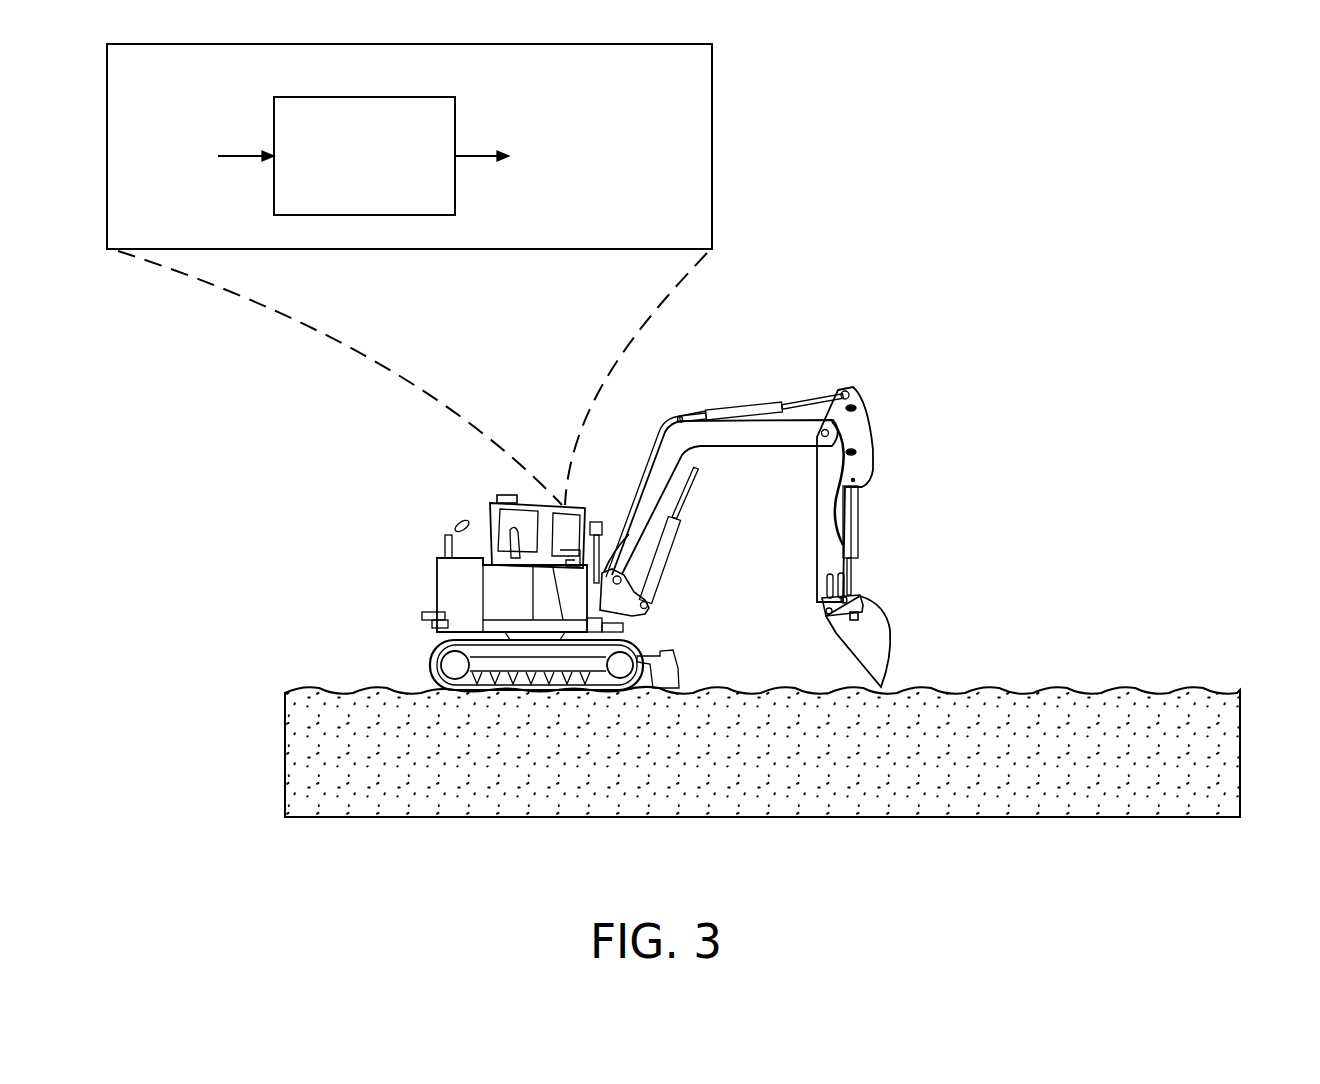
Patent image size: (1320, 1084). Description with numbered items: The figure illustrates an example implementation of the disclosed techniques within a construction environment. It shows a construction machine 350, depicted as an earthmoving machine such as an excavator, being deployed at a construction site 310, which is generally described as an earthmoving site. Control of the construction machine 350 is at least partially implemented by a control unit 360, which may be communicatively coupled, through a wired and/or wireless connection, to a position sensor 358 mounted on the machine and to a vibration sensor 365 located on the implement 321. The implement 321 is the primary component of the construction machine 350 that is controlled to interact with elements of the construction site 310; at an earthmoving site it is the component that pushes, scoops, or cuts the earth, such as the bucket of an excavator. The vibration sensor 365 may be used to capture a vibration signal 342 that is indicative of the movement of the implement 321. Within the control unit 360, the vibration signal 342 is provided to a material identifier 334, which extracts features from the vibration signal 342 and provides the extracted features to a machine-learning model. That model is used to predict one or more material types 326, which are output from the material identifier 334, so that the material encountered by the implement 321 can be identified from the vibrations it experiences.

The control unit 360 is at (476, 79).
The material identifier 334 is at (378, 181).
The vibration signal 342 is at (208, 152).
The material types 326 is at (561, 154).
The construction site 310 is at (1060, 384).
The construction machine 350 is at (639, 538).
The position sensor 358 is at (498, 493).
The vibration sensor 365 is at (867, 612).
The implement 321 is at (990, 610).